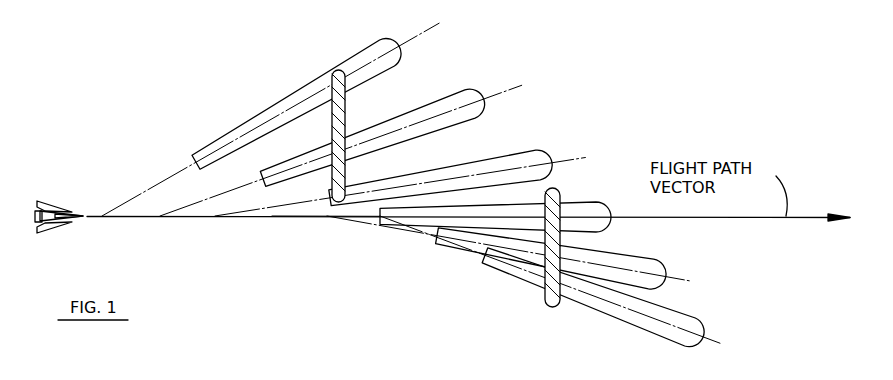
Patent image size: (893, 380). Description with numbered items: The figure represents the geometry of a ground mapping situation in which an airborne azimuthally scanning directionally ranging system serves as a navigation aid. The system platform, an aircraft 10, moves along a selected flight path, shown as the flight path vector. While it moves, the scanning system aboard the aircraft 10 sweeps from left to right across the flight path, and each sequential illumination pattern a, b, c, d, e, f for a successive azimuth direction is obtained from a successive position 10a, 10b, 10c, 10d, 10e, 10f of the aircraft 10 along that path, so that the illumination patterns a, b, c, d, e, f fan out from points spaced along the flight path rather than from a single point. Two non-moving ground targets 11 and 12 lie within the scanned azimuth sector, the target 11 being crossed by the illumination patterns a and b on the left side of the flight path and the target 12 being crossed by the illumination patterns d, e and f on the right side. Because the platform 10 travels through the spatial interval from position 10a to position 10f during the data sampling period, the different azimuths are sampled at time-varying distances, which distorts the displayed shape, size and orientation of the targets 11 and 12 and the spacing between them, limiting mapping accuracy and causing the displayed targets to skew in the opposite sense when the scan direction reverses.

The aircraft 10 is at (49, 208).
The aircraft position 10a is at (102, 218).
The aircraft position 10b is at (160, 218).
The aircraft position 10c is at (215, 218).
The aircraft position 10d is at (272, 218).
The aircraft position 10e is at (327, 218).
The aircraft position 10f is at (380, 220).
The non-moving ground target 11 is at (346, 97).
The non-moving ground target 12 is at (548, 287).
The illumination pattern a is at (393, 41).
The illumination pattern b is at (478, 92).
The illumination pattern c is at (545, 152).
The illumination pattern d is at (612, 210).
The illumination pattern e is at (569, 258).
The illumination pattern f is at (601, 312).